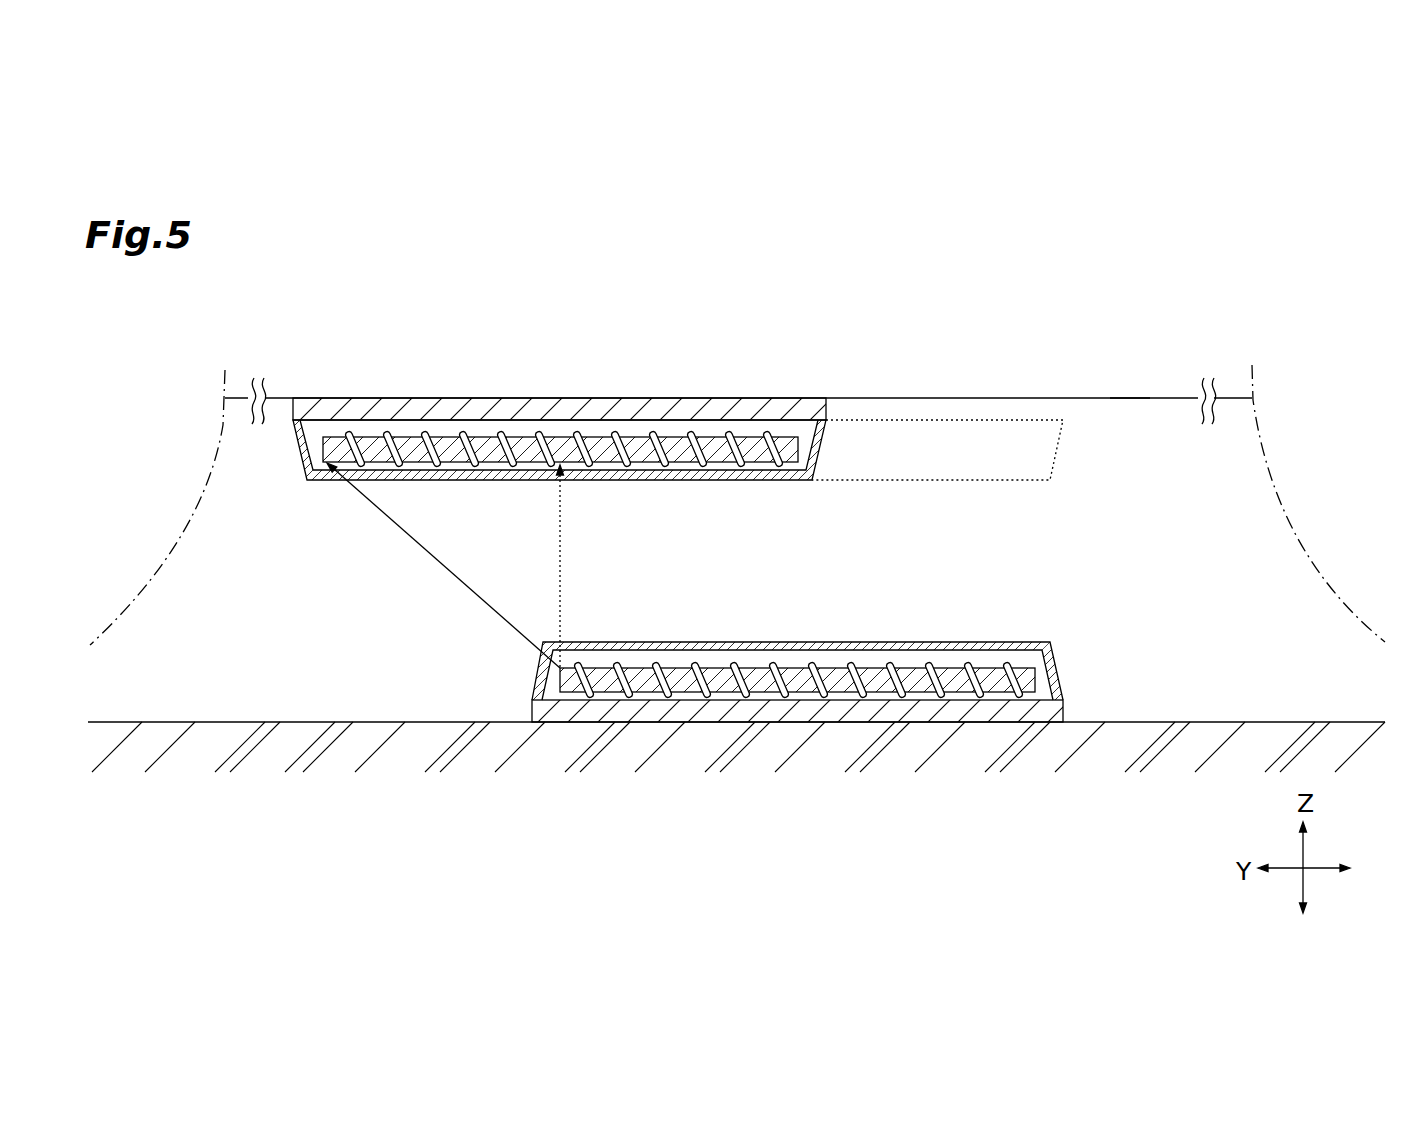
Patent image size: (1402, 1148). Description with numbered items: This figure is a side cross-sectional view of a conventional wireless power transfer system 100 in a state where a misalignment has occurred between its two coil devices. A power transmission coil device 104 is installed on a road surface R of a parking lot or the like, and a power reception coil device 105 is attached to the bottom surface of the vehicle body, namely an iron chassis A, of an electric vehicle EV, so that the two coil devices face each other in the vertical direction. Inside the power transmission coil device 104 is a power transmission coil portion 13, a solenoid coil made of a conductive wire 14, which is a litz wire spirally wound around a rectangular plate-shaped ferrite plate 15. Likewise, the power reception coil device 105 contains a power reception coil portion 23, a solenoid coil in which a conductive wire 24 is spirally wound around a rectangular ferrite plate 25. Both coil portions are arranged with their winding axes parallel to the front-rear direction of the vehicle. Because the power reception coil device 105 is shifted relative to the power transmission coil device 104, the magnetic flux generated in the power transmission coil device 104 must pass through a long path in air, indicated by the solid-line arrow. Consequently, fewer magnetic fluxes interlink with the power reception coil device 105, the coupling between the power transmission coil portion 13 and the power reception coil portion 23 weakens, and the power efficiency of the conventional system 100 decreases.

The conventional wireless power transfer system 100 is at (852, 330).
The iron chassis A is at (1131, 412).
The electric vehicle EV is at (1212, 500).
The power reception coil device 105 is at (781, 500).
The power reception coil portion 23 is at (560, 475).
The conductive wire 24 is at (648, 437).
The ferrite plate 25 is at (714, 437).
The power transmission coil device 104 is at (1025, 624).
The power transmission coil portion 13 is at (797, 765).
The ferrite plate 15 is at (777, 694).
The conductive wire 14 is at (828, 694).
The road surface R is at (308, 722).